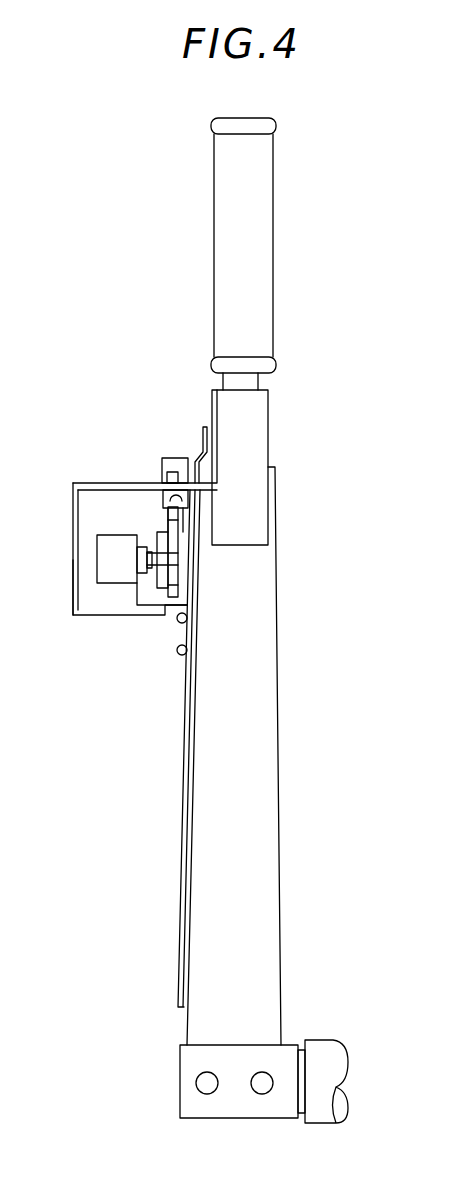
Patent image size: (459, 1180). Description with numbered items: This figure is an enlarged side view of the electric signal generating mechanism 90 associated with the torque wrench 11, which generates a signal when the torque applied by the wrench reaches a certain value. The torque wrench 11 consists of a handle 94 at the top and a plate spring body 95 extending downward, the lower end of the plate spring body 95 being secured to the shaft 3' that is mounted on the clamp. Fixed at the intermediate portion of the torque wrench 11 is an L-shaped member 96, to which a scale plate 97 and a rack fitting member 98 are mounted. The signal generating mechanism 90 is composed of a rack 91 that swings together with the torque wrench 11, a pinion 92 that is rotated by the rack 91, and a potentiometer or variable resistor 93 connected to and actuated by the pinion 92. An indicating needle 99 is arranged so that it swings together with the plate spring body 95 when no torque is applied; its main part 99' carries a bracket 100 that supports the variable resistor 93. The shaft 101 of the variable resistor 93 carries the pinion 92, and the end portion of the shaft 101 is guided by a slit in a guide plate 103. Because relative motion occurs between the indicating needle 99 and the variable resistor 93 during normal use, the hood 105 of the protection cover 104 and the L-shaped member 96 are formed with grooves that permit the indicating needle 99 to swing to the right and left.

The torque wrench 11 is at (282, 263).
The handle 94 is at (265, 315).
The L-shaped member 96 is at (217, 413).
The scale plate 97 is at (212, 405).
The indicating needle 99 is at (183, 446).
The hood 105 is at (108, 483).
The protection cover 104 is at (73, 610).
The variable resistor 93 is at (113, 540).
The shaft 101 is at (140, 575).
The bracket 100 is at (165, 605).
The pinion 92 is at (177, 580).
The guide plate 103 is at (185, 545).
The rack 91 is at (162, 490).
The rack fitting member 98 is at (188, 497).
The electric signal generating mechanism 90 is at (140, 652).
The main part of the indicating needle 99' is at (156, 748).
The plate spring body 95 is at (278, 908).
The shaft 3' is at (264, 1057).